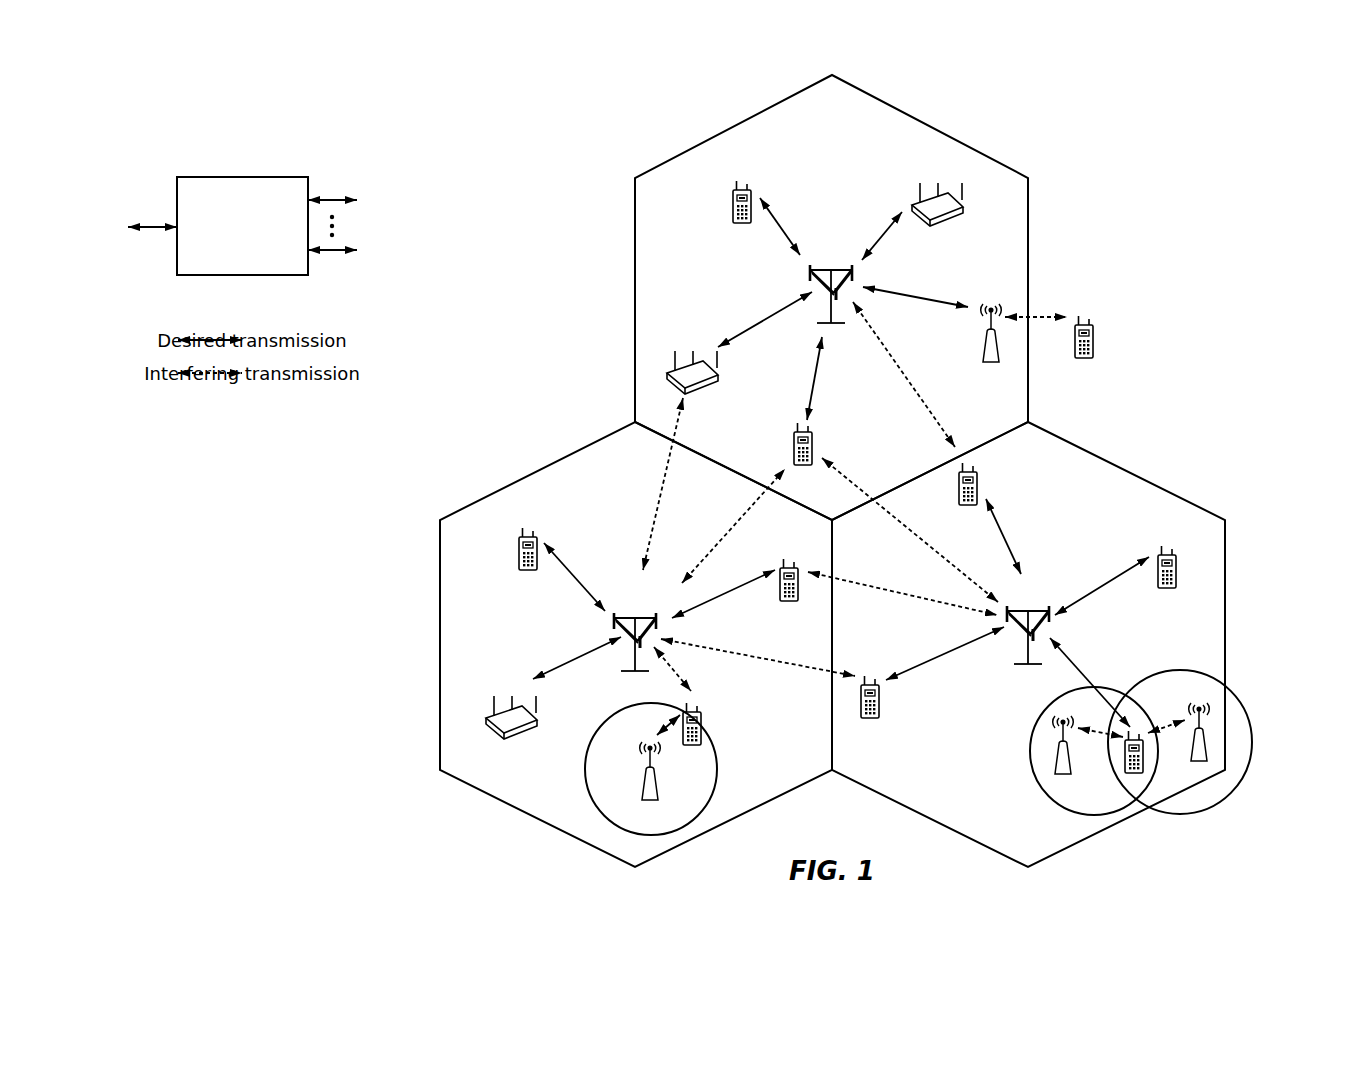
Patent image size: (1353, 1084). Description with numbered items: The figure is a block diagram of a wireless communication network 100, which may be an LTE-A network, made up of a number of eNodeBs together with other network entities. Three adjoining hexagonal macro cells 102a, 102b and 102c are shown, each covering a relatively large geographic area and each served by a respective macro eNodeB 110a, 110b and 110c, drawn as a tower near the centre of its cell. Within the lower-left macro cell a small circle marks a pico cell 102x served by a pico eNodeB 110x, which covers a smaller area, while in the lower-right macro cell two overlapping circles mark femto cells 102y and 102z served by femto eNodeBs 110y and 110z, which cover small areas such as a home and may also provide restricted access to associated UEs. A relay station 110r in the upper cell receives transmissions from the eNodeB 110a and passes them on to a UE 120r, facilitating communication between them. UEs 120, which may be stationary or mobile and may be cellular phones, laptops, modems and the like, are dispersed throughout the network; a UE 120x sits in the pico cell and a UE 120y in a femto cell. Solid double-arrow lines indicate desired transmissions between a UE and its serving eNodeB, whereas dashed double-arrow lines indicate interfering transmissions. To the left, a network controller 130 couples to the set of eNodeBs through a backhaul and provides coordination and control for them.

The wireless communication network 100 is at (1165, 138).
The macro cell 102a is at (931, 127).
The macro cell 102b is at (540, 470).
The macro cell 102c is at (1124, 470).
The pico cell 102x is at (606, 714).
The femto cell 102y is at (1033, 720).
The femto cell 102z is at (1178, 670).
The macro eNodeB 110a is at (828, 268).
The macro eNodeB 110b is at (632, 616).
The macro eNodeB 110c is at (1028, 610).
The relay station 110r is at (978, 347).
The pico eNodeB 110x is at (660, 790).
The femto eNodeB 110y is at (1071, 765).
The femto eNodeB 110z is at (1207, 752).
The UE 120 is at (731, 198).
The UE 120r is at (1093, 352).
The UE 120x is at (702, 714).
The UE 120y is at (1125, 772).
The network controller 130 is at (236, 176).